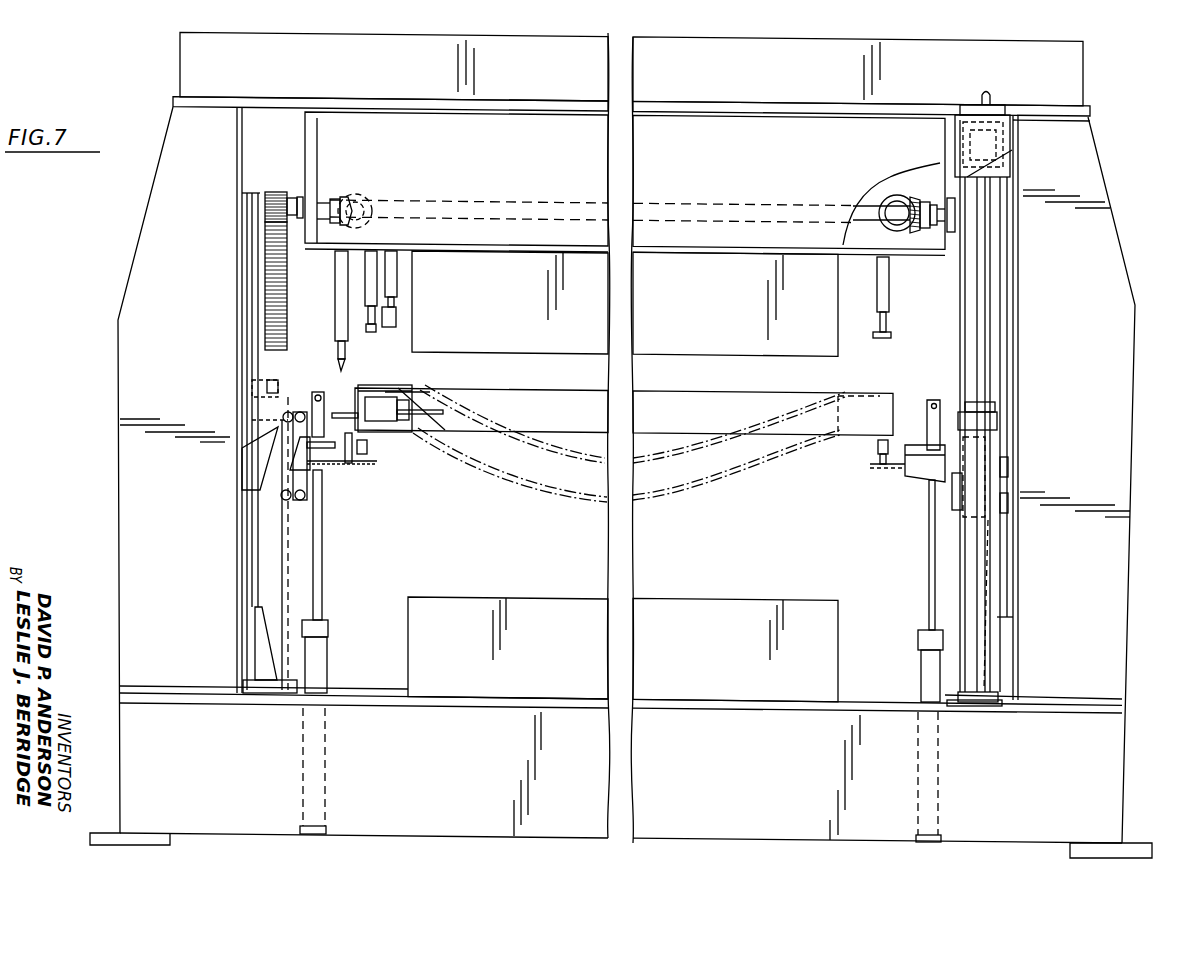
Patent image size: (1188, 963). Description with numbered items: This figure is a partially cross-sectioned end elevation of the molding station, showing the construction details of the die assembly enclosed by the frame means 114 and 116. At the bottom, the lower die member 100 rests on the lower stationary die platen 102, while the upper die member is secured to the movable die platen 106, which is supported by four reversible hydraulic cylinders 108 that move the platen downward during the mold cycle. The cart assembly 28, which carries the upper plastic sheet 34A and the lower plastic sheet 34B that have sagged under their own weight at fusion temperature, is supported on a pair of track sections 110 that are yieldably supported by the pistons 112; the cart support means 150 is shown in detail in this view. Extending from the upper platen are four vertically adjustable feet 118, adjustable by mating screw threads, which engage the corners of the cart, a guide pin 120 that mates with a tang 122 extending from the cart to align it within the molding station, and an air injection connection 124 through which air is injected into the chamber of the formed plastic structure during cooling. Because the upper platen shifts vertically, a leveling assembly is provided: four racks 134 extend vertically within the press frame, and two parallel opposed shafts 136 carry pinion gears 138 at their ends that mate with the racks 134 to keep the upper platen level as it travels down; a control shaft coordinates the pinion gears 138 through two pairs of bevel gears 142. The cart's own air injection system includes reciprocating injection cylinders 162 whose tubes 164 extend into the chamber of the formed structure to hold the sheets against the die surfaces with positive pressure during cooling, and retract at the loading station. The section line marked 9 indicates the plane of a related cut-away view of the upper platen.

The section line 9- 9 is at (170, 25).
The frame means 116 is at (396, 78).
The frame means 114 is at (136, 546).
The lower stationary die platen 102 is at (468, 784).
The movable die platen 106 is at (485, 178).
The opposed shafts 136 is at (668, 205).
The pinion gears 138 is at (277, 192).
The racks 134 is at (268, 330).
The bevel gears 142 is at (360, 198).
The guide pin 120 is at (340, 328).
The air injection connection 124 is at (398, 298).
The vertically adjustable feet 118 is at (890, 298).
The cart assembly 28 is at (374, 385).
The reciprocating injection cylinders 162 is at (402, 390).
The tubes 164 is at (425, 430).
The reversible hydraulic cylinders 108 is at (1000, 422).
The upper plastic sheet 34A is at (605, 458).
The lower plastic sheet 34B is at (690, 497).
The cart support means 150 is at (916, 404).
The track sections 110 is at (892, 464).
The tang 122 is at (352, 456).
The pistons 112 is at (312, 665).
The lower die member 100 is at (543, 613).